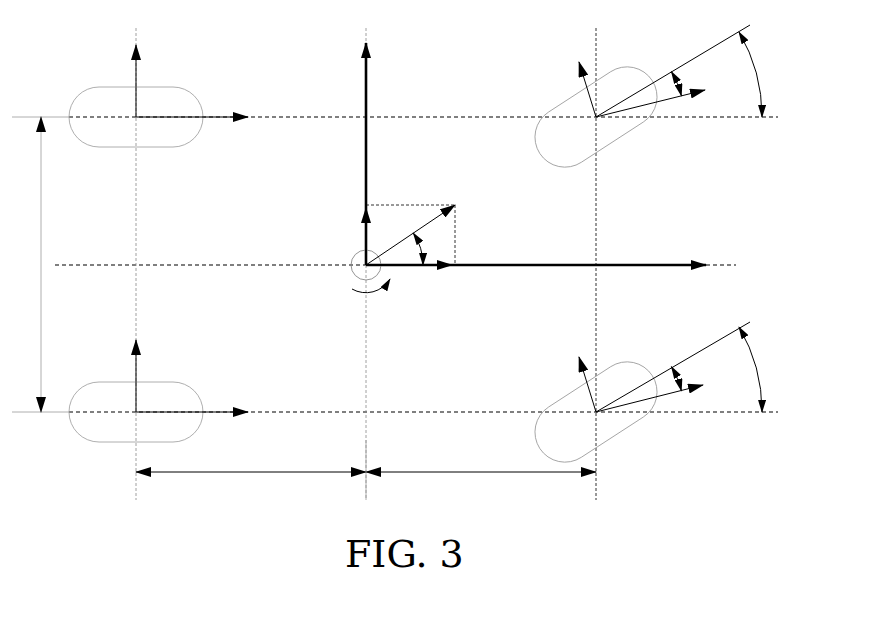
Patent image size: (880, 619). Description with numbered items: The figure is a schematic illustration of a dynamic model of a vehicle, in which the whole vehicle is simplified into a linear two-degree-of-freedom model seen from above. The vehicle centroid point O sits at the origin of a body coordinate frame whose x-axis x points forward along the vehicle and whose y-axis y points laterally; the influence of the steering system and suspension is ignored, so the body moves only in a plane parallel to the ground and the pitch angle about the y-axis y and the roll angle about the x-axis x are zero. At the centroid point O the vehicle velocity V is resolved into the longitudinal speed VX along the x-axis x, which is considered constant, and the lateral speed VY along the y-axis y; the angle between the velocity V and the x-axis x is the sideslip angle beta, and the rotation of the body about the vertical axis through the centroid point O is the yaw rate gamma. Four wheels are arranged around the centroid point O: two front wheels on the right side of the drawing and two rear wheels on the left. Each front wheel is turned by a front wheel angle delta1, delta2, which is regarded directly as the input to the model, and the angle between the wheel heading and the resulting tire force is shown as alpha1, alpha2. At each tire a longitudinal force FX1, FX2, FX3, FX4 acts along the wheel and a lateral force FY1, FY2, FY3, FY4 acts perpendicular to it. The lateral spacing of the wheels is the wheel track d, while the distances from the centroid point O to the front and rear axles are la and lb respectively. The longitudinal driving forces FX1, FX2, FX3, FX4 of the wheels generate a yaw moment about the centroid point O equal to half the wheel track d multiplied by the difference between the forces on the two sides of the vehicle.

The lateral force of tire FY1 is at (636, 102).
The longitudinal force of tire FX1 is at (666, 98).
The lateral force of tire FY2 is at (636, 398).
The longitudinal force of tire FX2 is at (665, 393).
The lateral force of tire FY3 is at (136, 96).
The longitudinal force of tire FX3 is at (193, 105).
The lateral force of tire FY4 is at (136, 391).
The longitudinal force of tire FX4 is at (193, 401).
The slip angle of front right wheel alpha1 is at (667, 72).
The slip angle of rear right wheel alpha2 is at (676, 364).
The front wheel angle delta1 is at (758, 74).
The front wheel angle delta2 is at (760, 369).
The vehicle velocity vector V is at (419, 228).
The longitudinal speed of vehicle body VX is at (414, 277).
The lateral speed of vehicle body VY is at (350, 230).
The sideslip angle beta is at (424, 249).
The yaw rate gamma is at (371, 298).
The vehicle centroid point O is at (356, 273).
The x-axis x is at (536, 276).
The y-axis y is at (351, 153).
The wheel track d is at (29, 264).
The distance from centroid point to front axle la is at (481, 461).
The distance from centroid point to rear axle lb is at (251, 461).